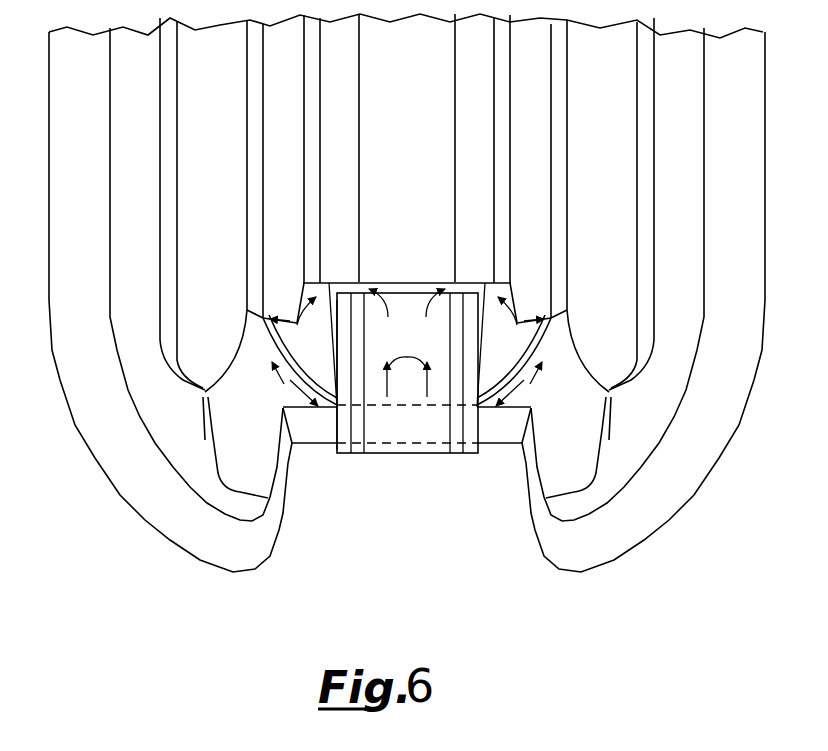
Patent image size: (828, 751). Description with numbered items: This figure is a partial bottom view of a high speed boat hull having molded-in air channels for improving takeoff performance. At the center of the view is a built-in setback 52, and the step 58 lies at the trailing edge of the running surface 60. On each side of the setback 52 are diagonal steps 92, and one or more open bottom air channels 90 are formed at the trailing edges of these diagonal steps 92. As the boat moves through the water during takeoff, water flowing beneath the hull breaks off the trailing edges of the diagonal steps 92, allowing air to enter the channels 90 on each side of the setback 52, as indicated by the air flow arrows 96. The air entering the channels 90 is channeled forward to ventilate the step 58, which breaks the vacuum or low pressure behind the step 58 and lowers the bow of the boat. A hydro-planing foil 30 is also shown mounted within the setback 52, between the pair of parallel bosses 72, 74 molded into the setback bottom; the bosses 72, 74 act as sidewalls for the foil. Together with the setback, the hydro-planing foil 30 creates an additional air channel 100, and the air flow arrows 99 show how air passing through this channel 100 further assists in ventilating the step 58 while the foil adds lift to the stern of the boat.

The running surface 60 is at (425, 177).
The built-in setback 52 is at (402, 288).
The step 58 is at (422, 283).
The boss 74 is at (362, 397).
The boss 72 is at (455, 400).
The air channel 100 is at (404, 393).
The hydro-planing foil 30 is at (340, 397).
The air flow arrows 96 is at (267, 413).
The open bottom air channel 90 is at (266, 338).
The diagonal step 92 is at (327, 357).
The air flow arrows 99 is at (407, 359).